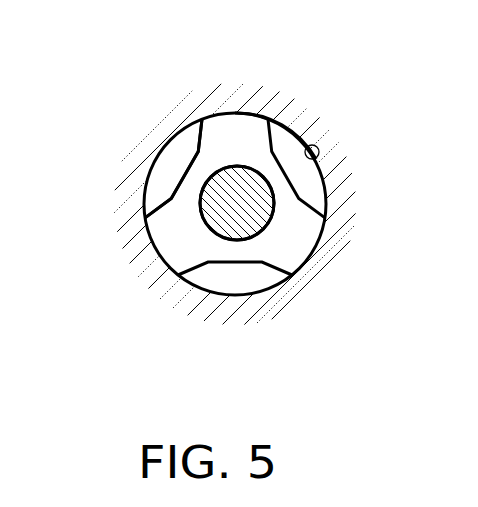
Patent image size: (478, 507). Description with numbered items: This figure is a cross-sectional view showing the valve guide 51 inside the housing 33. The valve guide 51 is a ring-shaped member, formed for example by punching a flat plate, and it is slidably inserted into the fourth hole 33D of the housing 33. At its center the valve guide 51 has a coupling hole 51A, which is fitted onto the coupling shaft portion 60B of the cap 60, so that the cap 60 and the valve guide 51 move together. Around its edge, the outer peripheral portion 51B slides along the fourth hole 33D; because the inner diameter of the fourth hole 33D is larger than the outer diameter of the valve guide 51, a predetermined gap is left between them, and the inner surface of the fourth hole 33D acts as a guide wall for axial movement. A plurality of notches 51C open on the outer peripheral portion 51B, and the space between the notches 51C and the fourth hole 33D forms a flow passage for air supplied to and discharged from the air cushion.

The housing 33 is at (338, 187).
The fourth hole 33D is at (319, 153).
The valve guide 51 is at (280, 148).
The coupling hole 51A is at (243, 168).
The outer peripheral portion 51B is at (248, 113).
The notches 51C is at (200, 135).
The cap 60 is at (148, 200).
The coupling shaft portion 60B is at (217, 218).